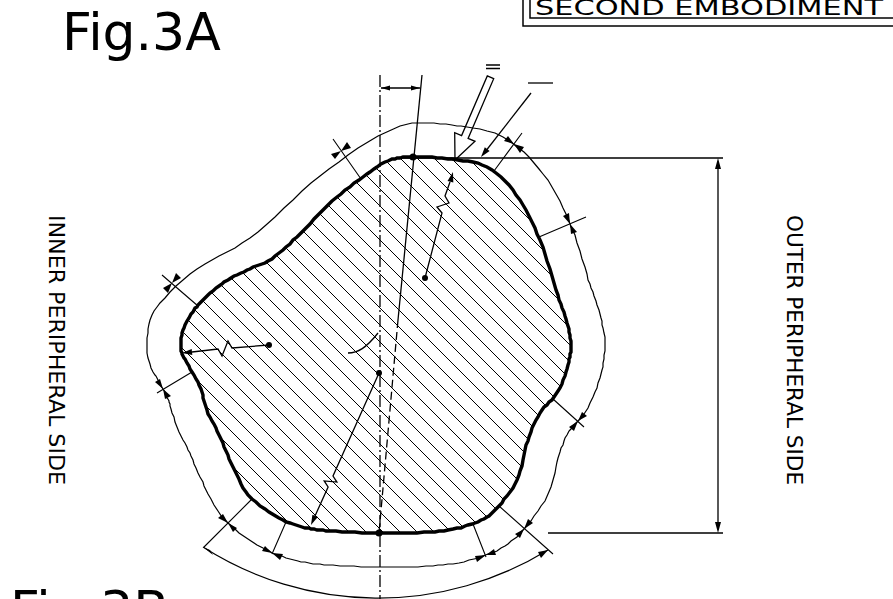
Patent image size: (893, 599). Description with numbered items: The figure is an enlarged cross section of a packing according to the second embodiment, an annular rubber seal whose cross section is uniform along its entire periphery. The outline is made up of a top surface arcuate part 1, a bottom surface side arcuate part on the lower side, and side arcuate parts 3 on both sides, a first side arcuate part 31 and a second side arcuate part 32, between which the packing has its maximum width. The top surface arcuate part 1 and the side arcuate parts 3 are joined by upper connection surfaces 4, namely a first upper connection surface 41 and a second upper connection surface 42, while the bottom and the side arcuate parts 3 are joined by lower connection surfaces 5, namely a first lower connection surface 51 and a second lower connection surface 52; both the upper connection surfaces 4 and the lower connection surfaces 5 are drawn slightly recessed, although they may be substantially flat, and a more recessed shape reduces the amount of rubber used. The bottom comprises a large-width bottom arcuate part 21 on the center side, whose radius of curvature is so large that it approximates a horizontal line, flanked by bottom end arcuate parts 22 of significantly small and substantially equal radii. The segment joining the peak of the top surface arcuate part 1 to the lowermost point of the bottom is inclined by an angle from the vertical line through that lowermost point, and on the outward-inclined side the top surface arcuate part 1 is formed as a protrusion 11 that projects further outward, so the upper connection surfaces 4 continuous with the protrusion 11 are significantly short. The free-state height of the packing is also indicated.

The top surface arcuate part 1 is at (446, 322).
The protrusion 11 is at (528, 198).
The upper connection surfaces 4 is at (421, 231).
The upper connection surface 41 is at (237, 211).
The upper connection surface 42 is at (605, 251).
The side arcuate parts 3 is at (378, 346).
The side arcuate part 31 is at (115, 336).
The side arcuate part 32 is at (640, 356).
The lower connection surfaces 5 is at (372, 464).
The lower connection surface 51 is at (157, 457).
The lower connection surface 52 is at (587, 471).
The bottom arcuate part 21 is at (401, 554).
The bottom end arcuate parts 22 is at (382, 526).